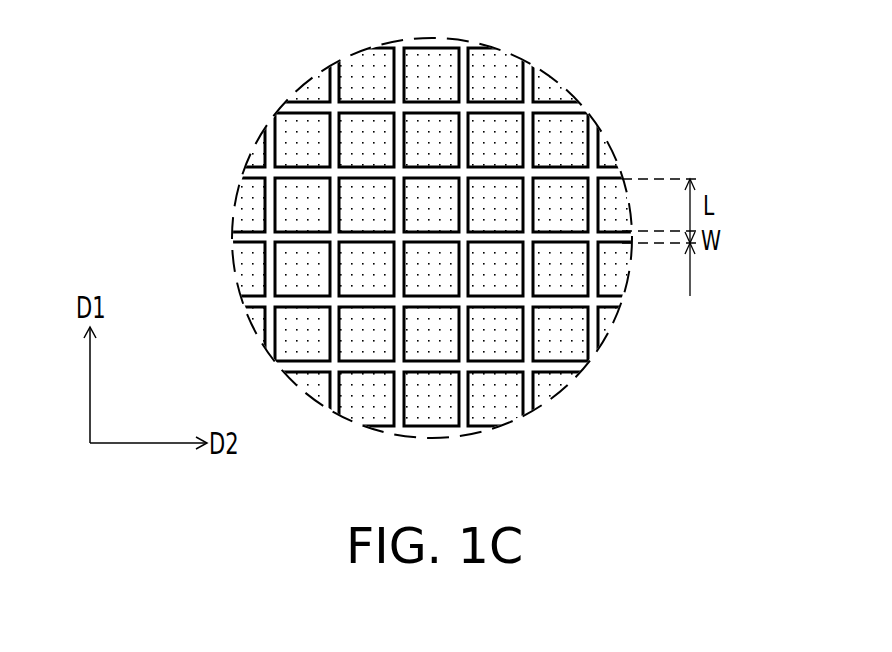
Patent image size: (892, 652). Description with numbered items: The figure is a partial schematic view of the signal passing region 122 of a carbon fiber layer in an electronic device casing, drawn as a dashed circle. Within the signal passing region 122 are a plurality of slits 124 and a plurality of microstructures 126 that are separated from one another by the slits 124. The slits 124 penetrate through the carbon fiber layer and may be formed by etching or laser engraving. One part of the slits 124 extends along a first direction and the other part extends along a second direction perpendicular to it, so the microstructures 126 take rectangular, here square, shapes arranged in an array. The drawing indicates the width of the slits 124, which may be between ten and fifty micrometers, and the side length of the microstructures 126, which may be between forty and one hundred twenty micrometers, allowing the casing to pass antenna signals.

The signal passing region 122 is at (320, 76).
The slits 124 is at (528, 97).
The microstructures 126 is at (562, 137).